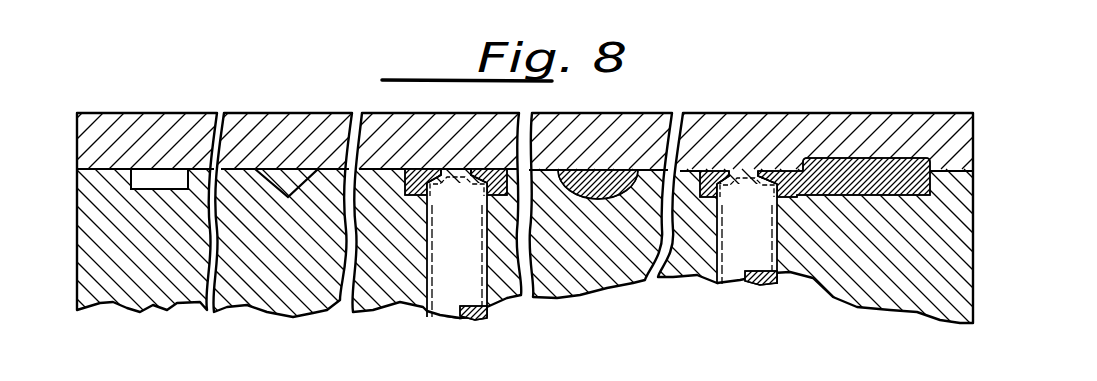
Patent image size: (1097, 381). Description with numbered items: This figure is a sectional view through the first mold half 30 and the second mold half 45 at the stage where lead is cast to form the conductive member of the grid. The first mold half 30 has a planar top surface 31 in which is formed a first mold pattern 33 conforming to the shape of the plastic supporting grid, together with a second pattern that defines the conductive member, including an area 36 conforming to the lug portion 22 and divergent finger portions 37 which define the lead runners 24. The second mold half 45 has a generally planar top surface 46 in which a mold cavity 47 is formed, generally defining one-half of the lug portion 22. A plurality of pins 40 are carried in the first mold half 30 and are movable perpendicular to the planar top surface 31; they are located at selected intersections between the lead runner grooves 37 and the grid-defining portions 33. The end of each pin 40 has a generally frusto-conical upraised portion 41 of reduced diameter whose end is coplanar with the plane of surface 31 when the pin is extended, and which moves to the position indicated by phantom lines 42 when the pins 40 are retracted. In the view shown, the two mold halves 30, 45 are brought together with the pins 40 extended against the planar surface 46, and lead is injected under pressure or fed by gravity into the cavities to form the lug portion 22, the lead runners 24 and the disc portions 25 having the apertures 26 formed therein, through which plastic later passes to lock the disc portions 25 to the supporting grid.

The lug portion 22 is at (896, 170).
The lead runners 24 is at (603, 178).
The disc portions 25 is at (400, 170).
The apertures 26 is at (470, 170).
The first mold half 30 is at (172, 285).
The planar top surface 31 is at (97, 178).
The first mold pattern 33 is at (279, 180).
The area 36 is at (870, 197).
The divergent finger portions 37 is at (600, 200).
The pins 40 is at (440, 302).
The frusto conical upraised portion 41 is at (440, 176).
The phantom lines 42 is at (462, 205).
The second mold half 45 is at (173, 128).
The planar top surface 46 is at (334, 172).
The mold cavity 47 is at (845, 160).